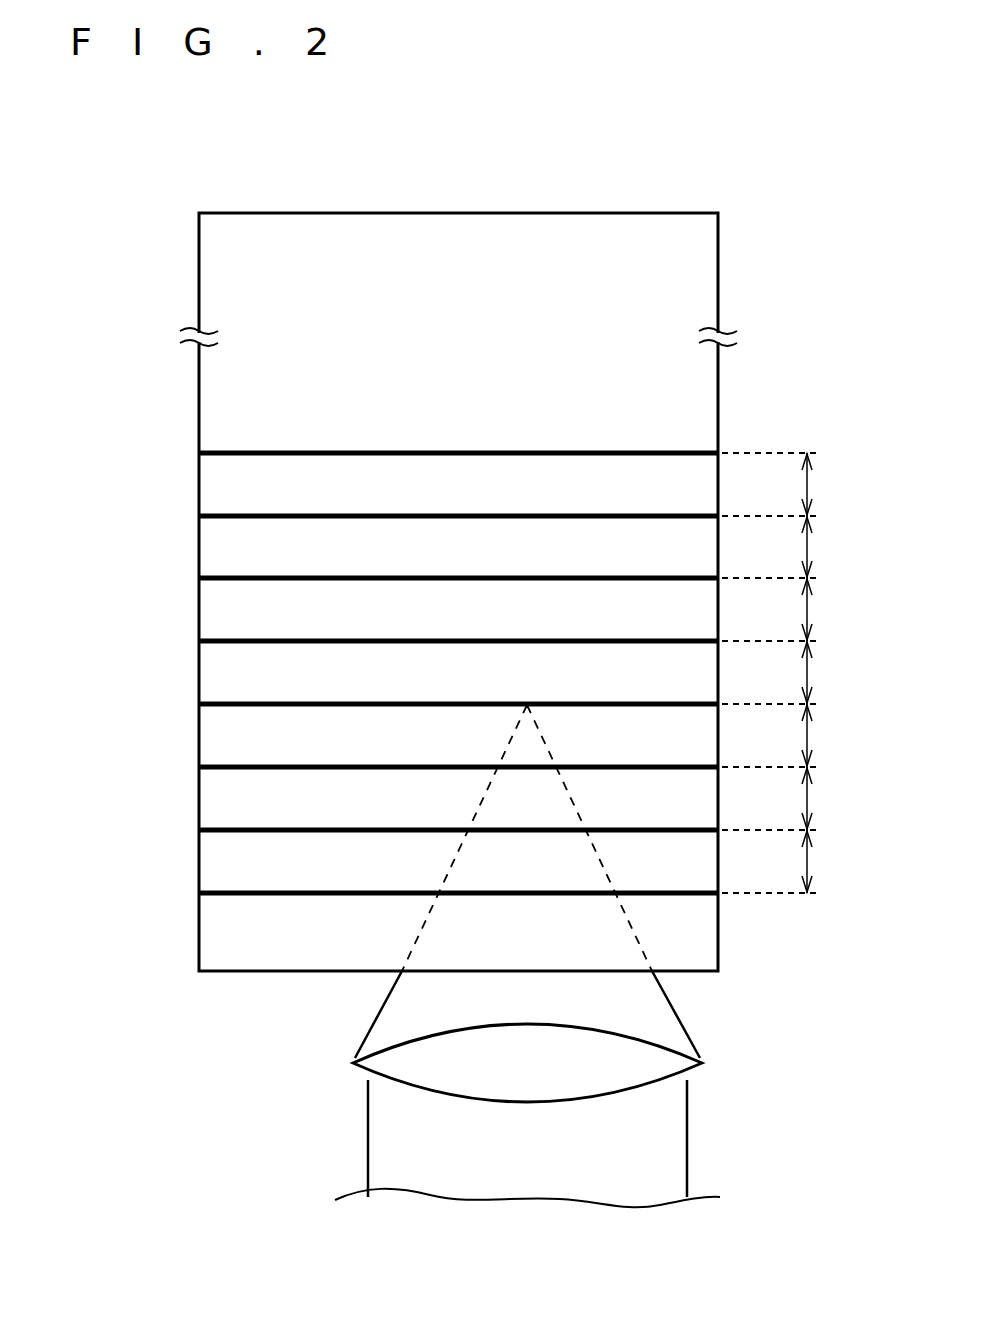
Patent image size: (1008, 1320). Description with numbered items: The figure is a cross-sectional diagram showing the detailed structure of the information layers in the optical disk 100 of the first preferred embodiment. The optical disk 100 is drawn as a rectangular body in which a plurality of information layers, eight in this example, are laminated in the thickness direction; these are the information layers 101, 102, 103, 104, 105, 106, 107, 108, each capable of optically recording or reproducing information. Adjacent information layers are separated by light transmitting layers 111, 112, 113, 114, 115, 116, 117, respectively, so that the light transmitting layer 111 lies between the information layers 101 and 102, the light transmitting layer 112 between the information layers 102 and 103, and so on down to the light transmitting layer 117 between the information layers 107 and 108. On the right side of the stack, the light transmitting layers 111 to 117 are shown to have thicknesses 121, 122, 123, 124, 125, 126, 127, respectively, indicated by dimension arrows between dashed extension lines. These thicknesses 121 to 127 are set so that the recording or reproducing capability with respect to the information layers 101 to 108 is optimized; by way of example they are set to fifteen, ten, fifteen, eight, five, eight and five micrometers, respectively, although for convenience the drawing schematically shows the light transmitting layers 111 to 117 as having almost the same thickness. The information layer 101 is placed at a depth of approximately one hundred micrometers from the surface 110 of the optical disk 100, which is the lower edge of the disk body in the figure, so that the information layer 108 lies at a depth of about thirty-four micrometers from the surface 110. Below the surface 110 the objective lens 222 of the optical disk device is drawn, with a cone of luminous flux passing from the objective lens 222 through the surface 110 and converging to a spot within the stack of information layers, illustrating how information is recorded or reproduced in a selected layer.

The optical disk 100 is at (460, 212).
The surface 110 is at (234, 990).
The information layer 101 is at (194, 453).
The information layer 102 is at (194, 516).
The information layer 103 is at (194, 578).
The information layer 104 is at (194, 641).
The information layer 105 is at (194, 704).
The information layer 106 is at (194, 767).
The information layer 107 is at (194, 830).
The information layer 108 is at (194, 893).
The light transmitting layer 111 is at (300, 500).
The light transmitting layer 112 is at (300, 563).
The light transmitting layer 113 is at (300, 625).
The light transmitting layer 114 is at (300, 688).
The light transmitting layer 115 is at (300, 751).
The light transmitting layer 116 is at (300, 814).
The light transmitting layer 117 is at (300, 877).
The thickness 121 is at (842, 484).
The thickness 122 is at (842, 547).
The thickness 123 is at (842, 609).
The thickness 124 is at (842, 672).
The thickness 125 is at (842, 735).
The thickness 126 is at (842, 798).
The thickness 127 is at (842, 861).
The objective lens 222 is at (704, 1063).